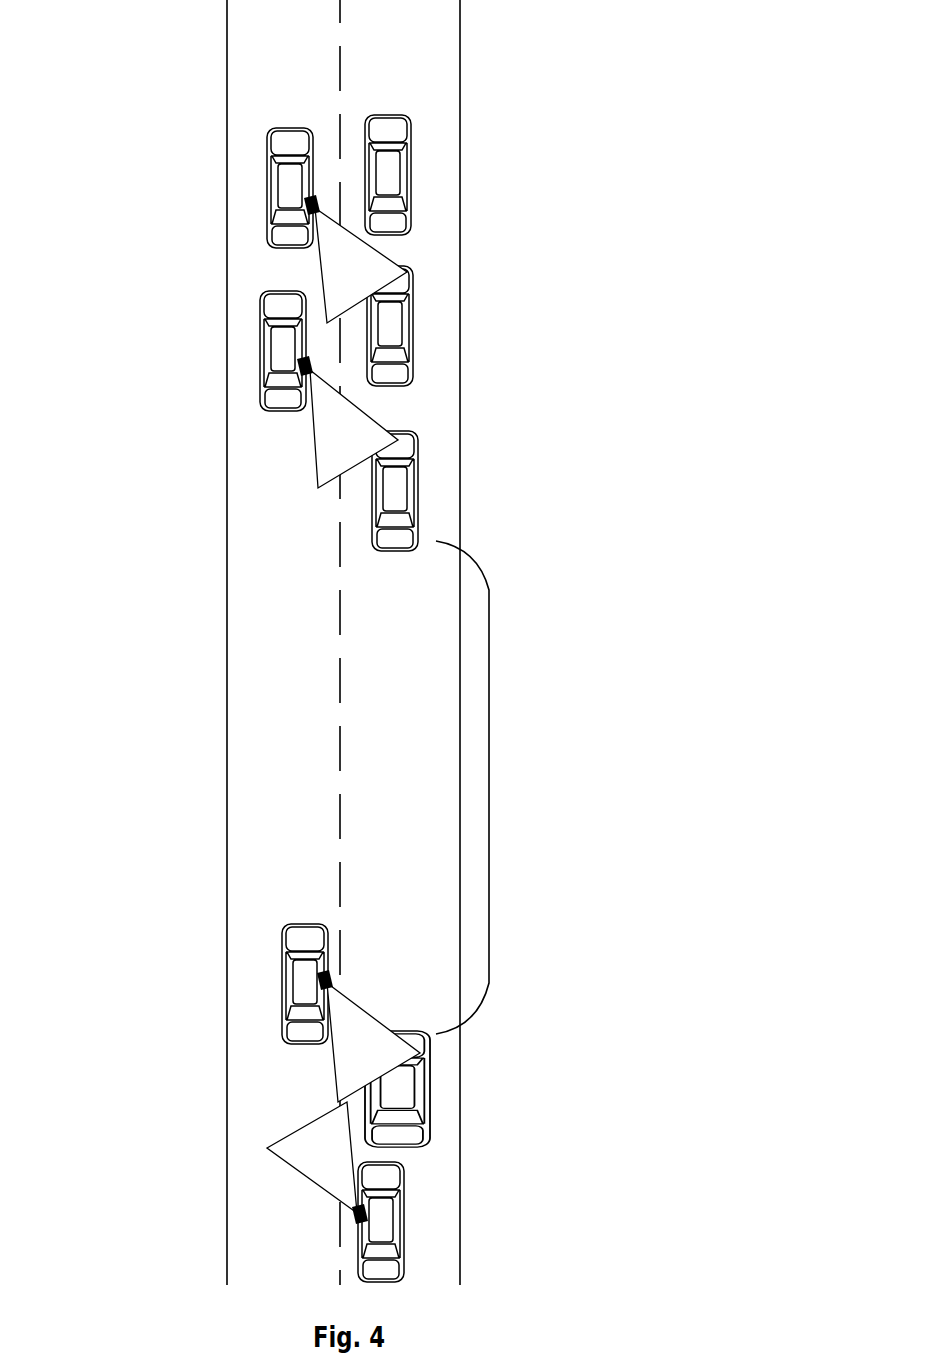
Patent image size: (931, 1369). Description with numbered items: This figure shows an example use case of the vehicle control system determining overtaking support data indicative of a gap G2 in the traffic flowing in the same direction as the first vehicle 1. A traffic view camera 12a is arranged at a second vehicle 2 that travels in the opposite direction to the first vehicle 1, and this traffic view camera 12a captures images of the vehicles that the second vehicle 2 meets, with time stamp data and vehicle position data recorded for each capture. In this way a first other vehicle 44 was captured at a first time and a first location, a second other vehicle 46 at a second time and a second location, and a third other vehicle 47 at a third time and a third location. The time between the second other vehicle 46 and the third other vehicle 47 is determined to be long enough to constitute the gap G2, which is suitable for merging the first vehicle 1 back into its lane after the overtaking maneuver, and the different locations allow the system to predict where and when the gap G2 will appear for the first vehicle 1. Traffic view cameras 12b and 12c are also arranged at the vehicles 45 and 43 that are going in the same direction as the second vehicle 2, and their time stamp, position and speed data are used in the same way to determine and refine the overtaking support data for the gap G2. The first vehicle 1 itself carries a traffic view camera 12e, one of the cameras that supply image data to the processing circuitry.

The first vehicle 1 is at (423, 1204).
The second vehicle 2 is at (258, 971).
The vehicle 43 is at (248, 177).
The first other vehicle 44 is at (433, 316).
The vehicle 45 is at (240, 347).
The second other vehicle 46 is at (436, 474).
The third other vehicle 47 is at (450, 1089).
The traffic view camera 12a is at (341, 1009).
The traffic view camera 12b is at (320, 401).
The traffic view camera 12c is at (330, 237).
The traffic view camera 12e is at (348, 1196).
The gap G2 is at (489, 782).